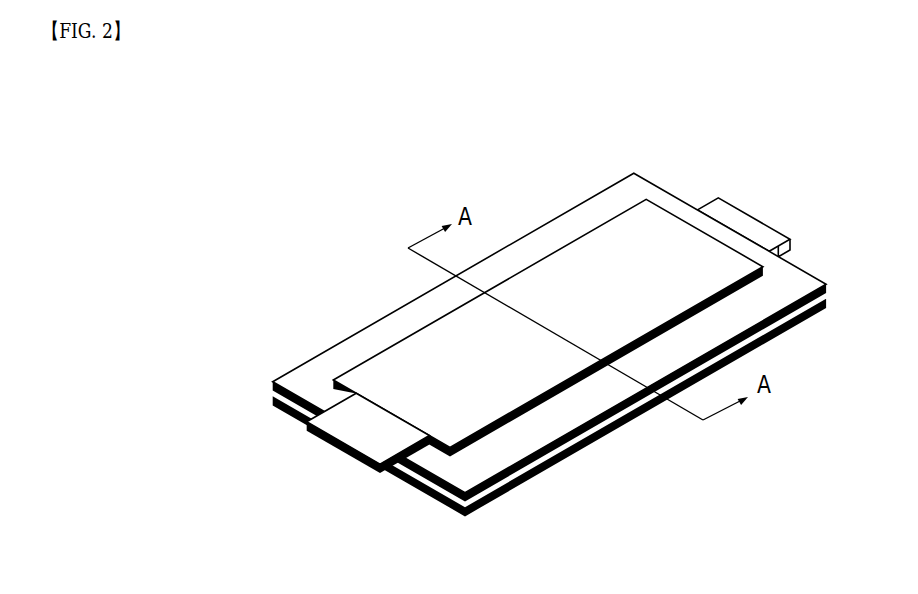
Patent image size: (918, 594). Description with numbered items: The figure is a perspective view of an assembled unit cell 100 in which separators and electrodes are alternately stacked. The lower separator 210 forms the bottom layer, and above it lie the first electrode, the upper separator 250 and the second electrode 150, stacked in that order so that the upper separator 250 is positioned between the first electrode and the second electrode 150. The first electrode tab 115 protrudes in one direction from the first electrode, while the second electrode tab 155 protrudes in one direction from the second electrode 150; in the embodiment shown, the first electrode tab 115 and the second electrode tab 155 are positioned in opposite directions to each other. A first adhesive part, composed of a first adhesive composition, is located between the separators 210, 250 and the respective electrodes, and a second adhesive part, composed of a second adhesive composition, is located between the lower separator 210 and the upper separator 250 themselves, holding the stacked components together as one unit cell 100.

The battery cell 100 is at (537, 108).
The first electrode tab 115 is at (740, 224).
The second electrode 150 is at (421, 350).
The second electrode tab 155 is at (367, 438).
The lower separator 210 is at (283, 413).
The upper separator 250 is at (320, 367).